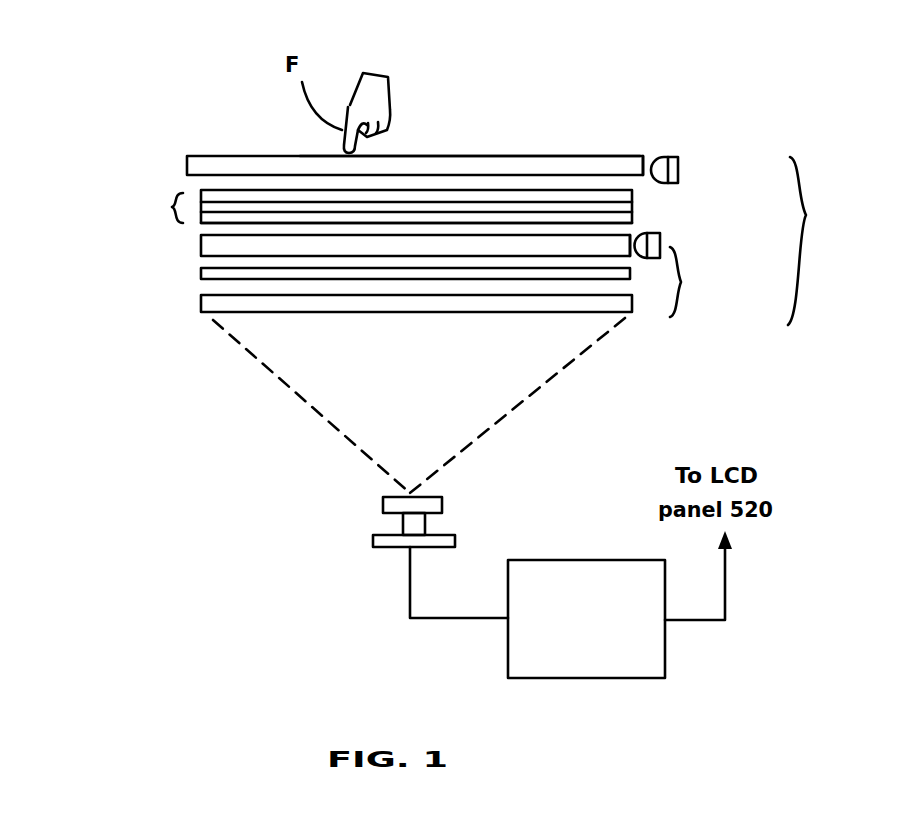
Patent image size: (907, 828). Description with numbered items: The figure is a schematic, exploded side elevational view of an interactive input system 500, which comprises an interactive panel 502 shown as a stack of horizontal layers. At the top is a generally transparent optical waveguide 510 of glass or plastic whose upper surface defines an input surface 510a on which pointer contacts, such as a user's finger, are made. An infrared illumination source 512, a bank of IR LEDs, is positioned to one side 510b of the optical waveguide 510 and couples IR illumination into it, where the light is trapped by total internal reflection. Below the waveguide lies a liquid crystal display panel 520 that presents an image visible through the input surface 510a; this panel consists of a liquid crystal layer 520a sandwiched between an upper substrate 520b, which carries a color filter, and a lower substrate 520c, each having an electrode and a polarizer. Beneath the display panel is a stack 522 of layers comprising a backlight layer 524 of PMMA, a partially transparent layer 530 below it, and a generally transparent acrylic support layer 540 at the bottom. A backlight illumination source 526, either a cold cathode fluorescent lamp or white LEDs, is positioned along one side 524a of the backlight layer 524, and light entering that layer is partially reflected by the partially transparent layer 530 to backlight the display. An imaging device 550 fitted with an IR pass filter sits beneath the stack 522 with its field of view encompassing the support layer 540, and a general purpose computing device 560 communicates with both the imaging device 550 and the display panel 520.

The interactive input system 500 is at (592, 66).
The optical waveguide 510 is at (185, 167).
The input surface 510a is at (470, 157).
The side of the optical waveguide 510b is at (650, 155).
The infrared illumination source 512 is at (679, 156).
The liquid crystal display panel 520 is at (170, 210).
The liquid crystal layer 520a is at (632, 207).
The upper substrate 520b is at (632, 195).
The lower substrate 520c is at (632, 218).
The interactive panel 502 is at (834, 241).
The backlight layer 524 is at (200, 255).
The side of the backlight layer 524a is at (633, 256).
The backlight illumination source 526 is at (661, 247).
The stack of layers 522 is at (702, 282).
The partially transparent layer 530 is at (202, 273).
The support layer 540 is at (202, 312).
The imaging device 550 is at (397, 503).
The general purpose computing device 560 is at (642, 660).